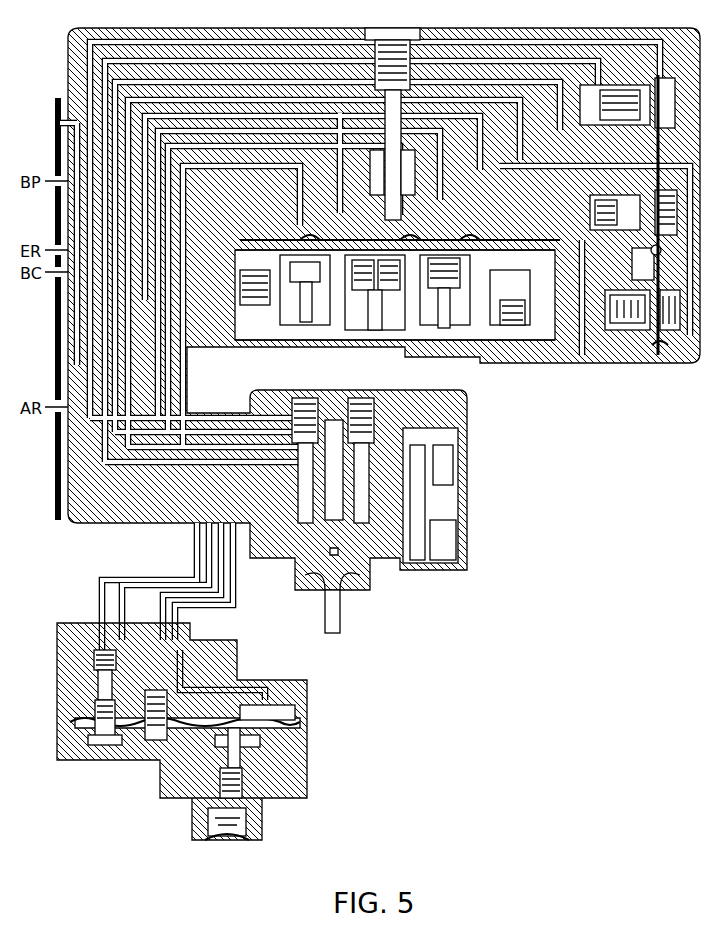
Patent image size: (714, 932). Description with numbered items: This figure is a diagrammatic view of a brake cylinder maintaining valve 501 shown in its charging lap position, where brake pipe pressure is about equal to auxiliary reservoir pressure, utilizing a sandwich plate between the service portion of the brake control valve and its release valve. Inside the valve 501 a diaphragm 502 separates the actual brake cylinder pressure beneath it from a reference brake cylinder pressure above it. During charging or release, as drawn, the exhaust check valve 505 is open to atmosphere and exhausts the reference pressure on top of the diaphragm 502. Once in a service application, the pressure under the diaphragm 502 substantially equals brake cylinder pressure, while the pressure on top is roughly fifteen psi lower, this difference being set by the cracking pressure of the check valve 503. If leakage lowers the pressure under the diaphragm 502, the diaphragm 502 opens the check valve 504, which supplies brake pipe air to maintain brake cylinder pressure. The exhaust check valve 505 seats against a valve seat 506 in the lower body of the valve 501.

The brake cylinder maintaining valve 501 is at (252, 698).
The diaphragm 502 is at (100, 730).
The check valve 503 is at (150, 735).
The check valve 504 is at (87, 695).
The exhaust check valve 505 is at (243, 812).
The valve seat 506 is at (245, 775).